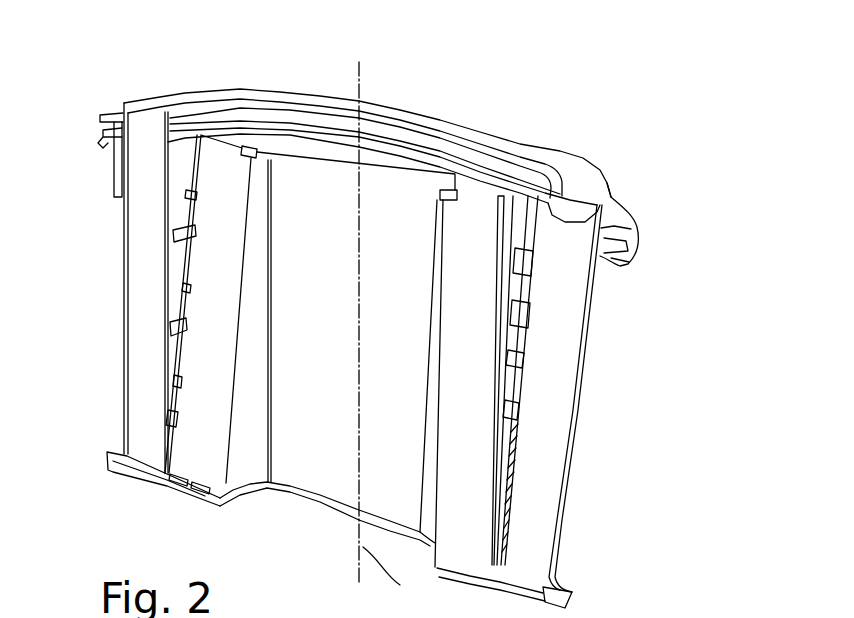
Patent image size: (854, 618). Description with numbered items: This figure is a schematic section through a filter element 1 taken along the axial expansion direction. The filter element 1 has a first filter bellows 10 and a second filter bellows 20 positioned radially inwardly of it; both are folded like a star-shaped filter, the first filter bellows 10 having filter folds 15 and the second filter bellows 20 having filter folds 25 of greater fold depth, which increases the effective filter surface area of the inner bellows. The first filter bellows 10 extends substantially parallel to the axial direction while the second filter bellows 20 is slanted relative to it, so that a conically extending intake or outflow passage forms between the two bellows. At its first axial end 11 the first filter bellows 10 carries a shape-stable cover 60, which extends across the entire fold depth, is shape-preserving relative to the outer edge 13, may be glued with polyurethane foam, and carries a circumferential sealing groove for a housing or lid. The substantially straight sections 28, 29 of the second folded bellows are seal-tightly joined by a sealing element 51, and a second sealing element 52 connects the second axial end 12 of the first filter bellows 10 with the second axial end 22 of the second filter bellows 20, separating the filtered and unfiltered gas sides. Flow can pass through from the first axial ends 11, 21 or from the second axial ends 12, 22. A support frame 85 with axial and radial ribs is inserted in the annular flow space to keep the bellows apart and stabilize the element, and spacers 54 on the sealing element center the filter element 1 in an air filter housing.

The filter element 1 is at (620, 95).
The first filter bellows 10 is at (137, 343).
The first axial end 11 is at (112, 114).
The second axial end 12 is at (142, 465).
The outer edge 13 is at (125, 263).
The filter folds 15 is at (560, 390).
The second filter bellows 20 is at (208, 466).
The first axial end 21 is at (490, 205).
The second axial end 22 is at (182, 478).
The filter folds 25 is at (230, 140).
The substantially straight section 28 is at (319, 185).
The substantially straight section 29 is at (319, 185).
The sealing element 51 is at (398, 175).
The second sealing element 52 is at (240, 490).
The spacers 54 is at (572, 601).
The shape-stable cover 60 is at (587, 186).
The support frame 85 is at (524, 294).